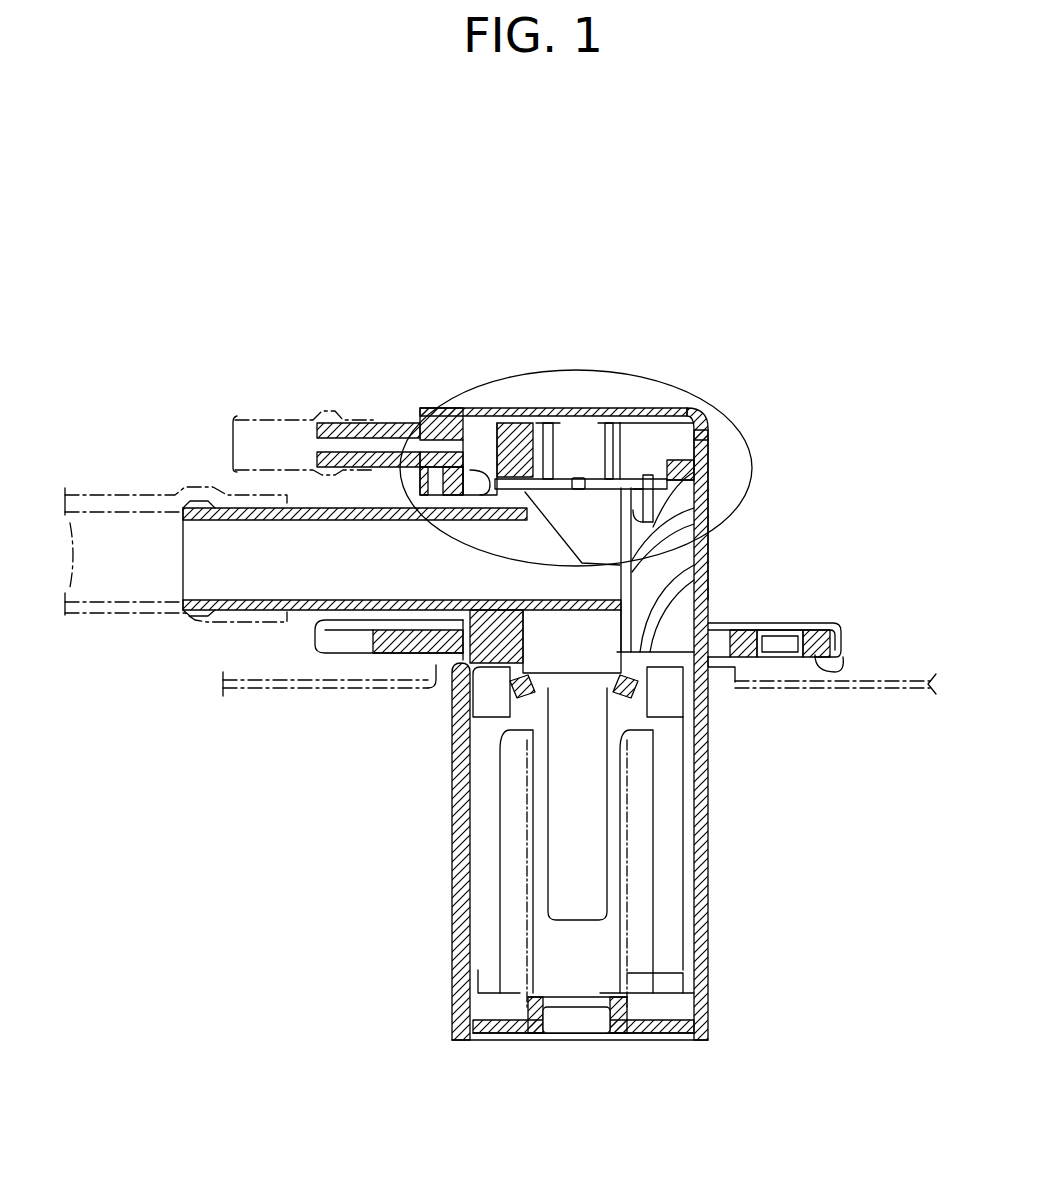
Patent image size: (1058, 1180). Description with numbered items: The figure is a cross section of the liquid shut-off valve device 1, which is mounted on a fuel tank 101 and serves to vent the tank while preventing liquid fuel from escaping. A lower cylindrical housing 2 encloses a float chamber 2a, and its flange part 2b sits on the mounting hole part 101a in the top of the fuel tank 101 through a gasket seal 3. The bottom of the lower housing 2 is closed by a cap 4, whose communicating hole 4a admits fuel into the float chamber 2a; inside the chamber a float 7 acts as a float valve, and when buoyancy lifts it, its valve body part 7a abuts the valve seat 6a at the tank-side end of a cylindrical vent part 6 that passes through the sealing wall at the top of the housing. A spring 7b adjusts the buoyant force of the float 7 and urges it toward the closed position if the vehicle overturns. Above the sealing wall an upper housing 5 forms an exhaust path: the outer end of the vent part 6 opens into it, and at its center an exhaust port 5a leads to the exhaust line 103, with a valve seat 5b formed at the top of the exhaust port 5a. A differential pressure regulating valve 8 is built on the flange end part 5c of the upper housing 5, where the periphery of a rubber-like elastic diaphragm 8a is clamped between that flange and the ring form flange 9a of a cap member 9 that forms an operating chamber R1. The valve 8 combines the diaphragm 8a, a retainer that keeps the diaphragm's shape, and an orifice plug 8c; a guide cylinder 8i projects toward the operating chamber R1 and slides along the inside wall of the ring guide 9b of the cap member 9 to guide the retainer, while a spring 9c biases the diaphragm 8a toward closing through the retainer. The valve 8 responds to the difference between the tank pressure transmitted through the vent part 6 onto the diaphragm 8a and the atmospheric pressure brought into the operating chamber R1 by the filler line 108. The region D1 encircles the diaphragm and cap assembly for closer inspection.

The liquid shut-off valve device 1 is at (545, 212).
The lower cylindrical housing 2 is at (685, 688).
The float chamber 2a is at (685, 800).
The flange part 2b is at (740, 625).
The gasket seal 3 is at (838, 672).
The cap 4 is at (660, 1040).
The communicating hole 4a is at (485, 1040).
The upper housing 5 is at (737, 527).
The exhaust port 5a is at (752, 517).
The valve seat 5b is at (752, 500).
The flange end part 5c is at (748, 485).
The cylindrical vent part 6 is at (720, 558).
The valve seat 6a is at (672, 595).
The float 7 is at (656, 905).
The valve body part 7a is at (640, 680).
The spring 7b is at (694, 995).
The differential pressure regulating valve 8 is at (643, 408).
The diaphragm 8a is at (699, 440).
The orifice plug 8c is at (720, 447).
The guide cylinder 8i is at (500, 455).
The cap member 9 is at (608, 425).
The ring form flange 9a is at (752, 465).
The ring guide 9b is at (507, 479).
The spring 9c is at (580, 423).
The operating chamber R1 is at (636, 458).
The detail region D1 is at (430, 398).
The fuel tank 101 is at (275, 692).
The mounting hole part 101a is at (440, 652).
The exhaust line 103 is at (90, 492).
The filler line 108 is at (258, 416).